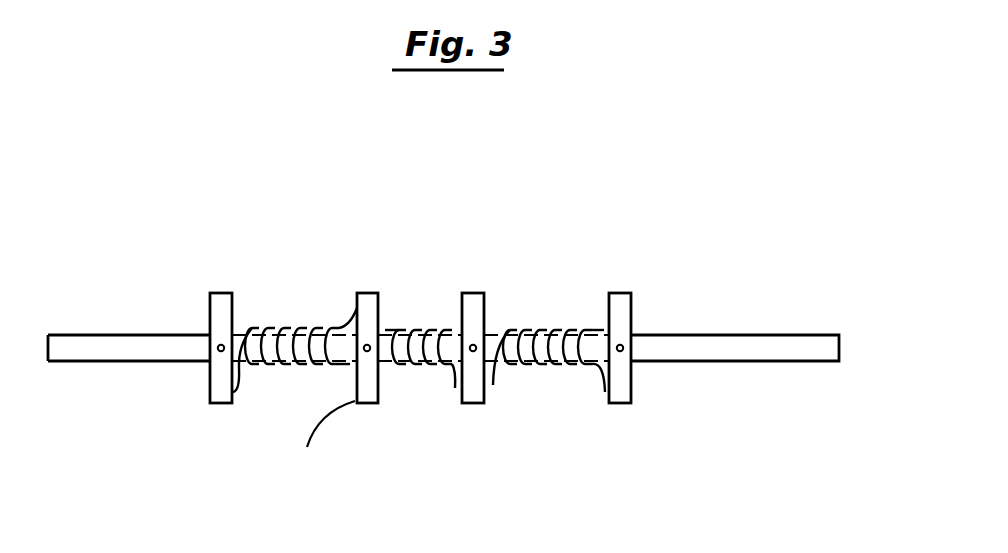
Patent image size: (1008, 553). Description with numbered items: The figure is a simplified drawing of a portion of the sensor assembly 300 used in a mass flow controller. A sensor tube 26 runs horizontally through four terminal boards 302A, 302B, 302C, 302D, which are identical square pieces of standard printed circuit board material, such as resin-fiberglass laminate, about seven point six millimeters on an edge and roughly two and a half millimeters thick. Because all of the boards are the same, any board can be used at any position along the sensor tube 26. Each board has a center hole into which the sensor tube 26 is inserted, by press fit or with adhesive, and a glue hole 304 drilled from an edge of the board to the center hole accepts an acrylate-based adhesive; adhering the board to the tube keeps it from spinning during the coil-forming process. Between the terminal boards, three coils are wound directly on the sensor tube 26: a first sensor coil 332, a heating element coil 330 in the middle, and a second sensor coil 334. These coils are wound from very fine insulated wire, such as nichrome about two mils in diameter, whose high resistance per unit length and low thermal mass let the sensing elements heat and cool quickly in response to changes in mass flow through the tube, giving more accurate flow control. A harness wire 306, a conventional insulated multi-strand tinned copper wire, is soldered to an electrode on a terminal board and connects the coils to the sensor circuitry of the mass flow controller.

The sensor assembly 300 is at (551, 192).
The sensor tube 26 is at (728, 336).
The terminal board 302A is at (221, 293).
The terminal board 302B is at (367, 293).
The terminal board 302C is at (473, 293).
The terminal board 302D is at (620, 293).
The glue hole 304 is at (219, 352).
The harness wire 306 is at (327, 428).
The heating element coil 330 is at (414, 328).
The first sensor coil 332 is at (278, 326).
The second sensor coil 334 is at (544, 330).